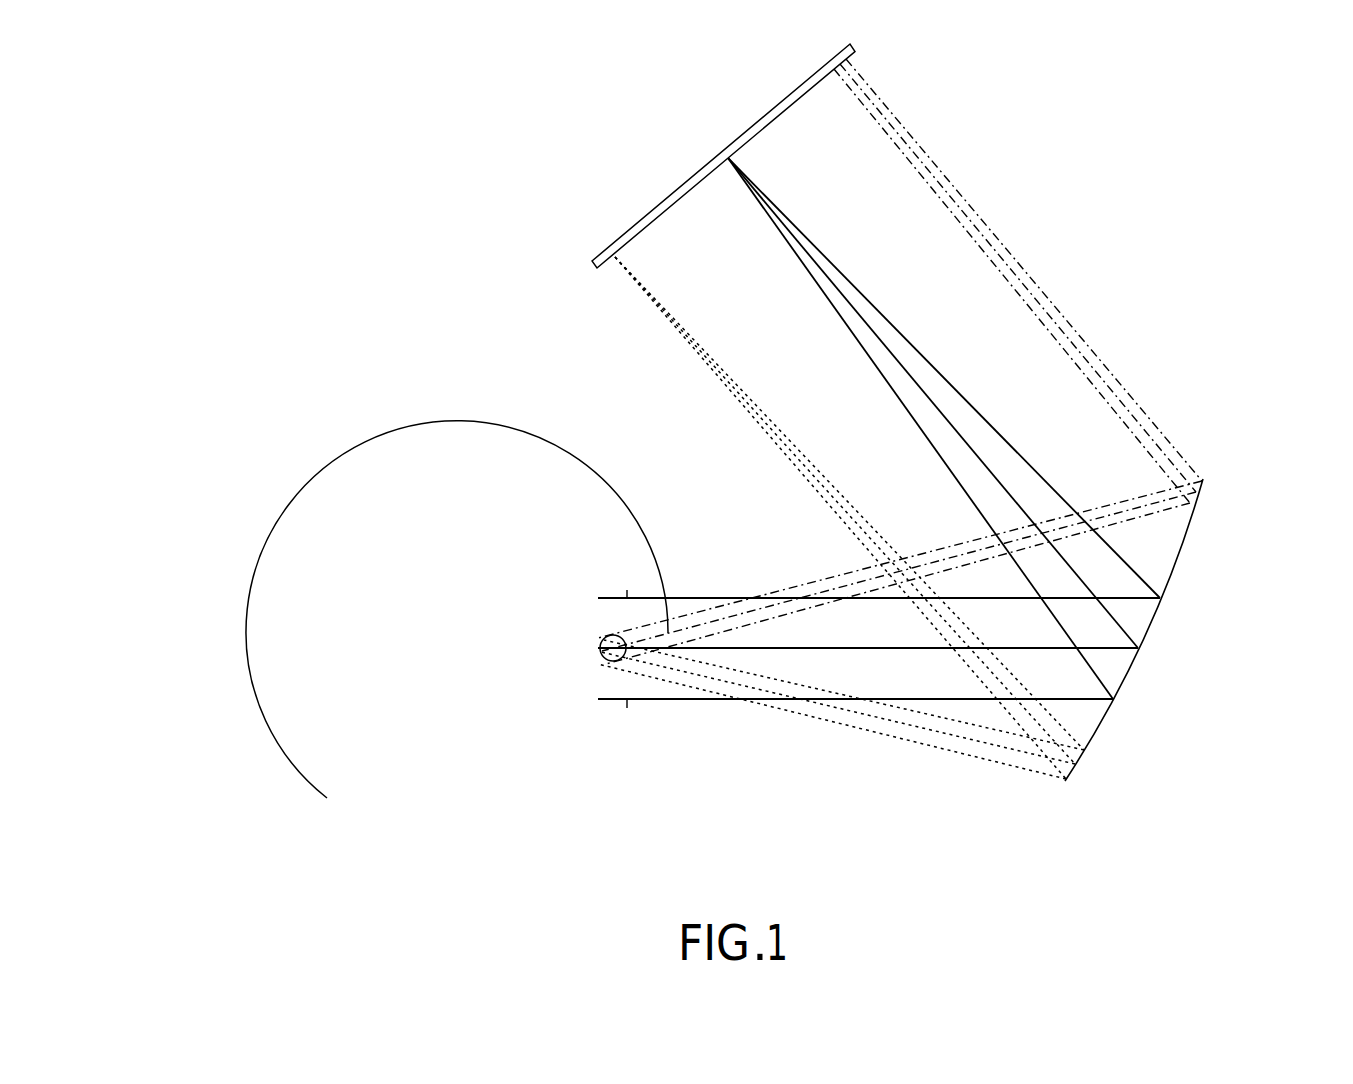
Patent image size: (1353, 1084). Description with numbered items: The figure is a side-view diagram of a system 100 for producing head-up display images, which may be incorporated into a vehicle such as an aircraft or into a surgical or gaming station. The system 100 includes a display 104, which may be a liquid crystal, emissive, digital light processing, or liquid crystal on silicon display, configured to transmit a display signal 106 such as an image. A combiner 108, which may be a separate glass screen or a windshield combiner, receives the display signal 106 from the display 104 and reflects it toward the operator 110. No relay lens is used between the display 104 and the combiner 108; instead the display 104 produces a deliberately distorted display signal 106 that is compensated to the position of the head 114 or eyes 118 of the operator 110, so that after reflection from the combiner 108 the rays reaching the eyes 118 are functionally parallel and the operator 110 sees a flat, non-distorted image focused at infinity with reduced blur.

The system 100 is at (336, 118).
The display 104 is at (705, 127).
The display signal 106 is at (727, 363).
The combiner 108 is at (1158, 660).
The operator 110 is at (250, 730).
The head 114 is at (450, 647).
The eyes 118 is at (593, 628).